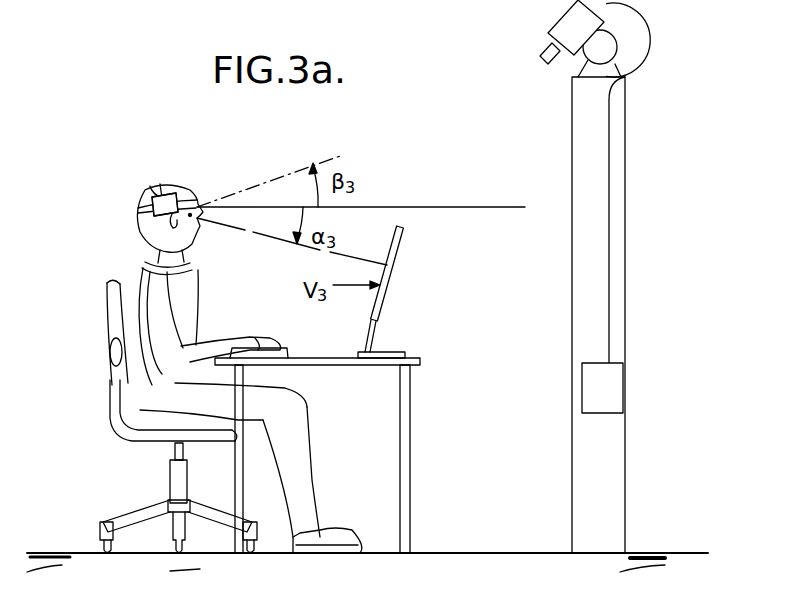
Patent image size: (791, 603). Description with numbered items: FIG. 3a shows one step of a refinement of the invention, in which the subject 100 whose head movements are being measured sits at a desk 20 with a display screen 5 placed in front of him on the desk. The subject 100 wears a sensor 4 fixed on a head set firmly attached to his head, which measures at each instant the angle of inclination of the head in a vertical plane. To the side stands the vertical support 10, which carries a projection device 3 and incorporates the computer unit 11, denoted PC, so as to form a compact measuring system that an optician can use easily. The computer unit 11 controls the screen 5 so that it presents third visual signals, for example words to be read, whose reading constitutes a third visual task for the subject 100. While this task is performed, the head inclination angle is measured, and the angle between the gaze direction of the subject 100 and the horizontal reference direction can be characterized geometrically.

The projection device 3 is at (570, 22).
The sensor 4 is at (140, 200).
The display screen 5 is at (398, 250).
The vertical support 10 is at (603, 475).
The computer unit 11 is at (605, 371).
The desk 20 is at (340, 366).
The subject 100 is at (128, 280).